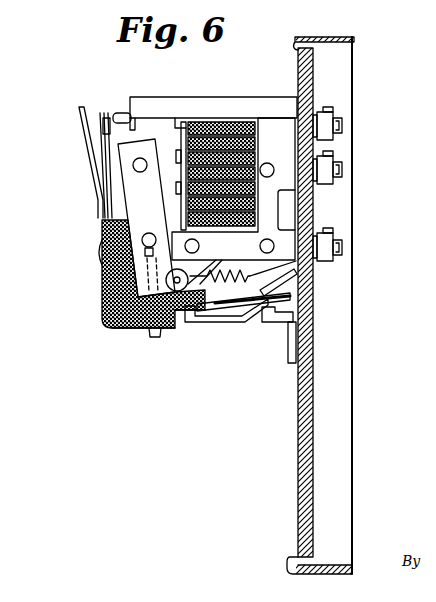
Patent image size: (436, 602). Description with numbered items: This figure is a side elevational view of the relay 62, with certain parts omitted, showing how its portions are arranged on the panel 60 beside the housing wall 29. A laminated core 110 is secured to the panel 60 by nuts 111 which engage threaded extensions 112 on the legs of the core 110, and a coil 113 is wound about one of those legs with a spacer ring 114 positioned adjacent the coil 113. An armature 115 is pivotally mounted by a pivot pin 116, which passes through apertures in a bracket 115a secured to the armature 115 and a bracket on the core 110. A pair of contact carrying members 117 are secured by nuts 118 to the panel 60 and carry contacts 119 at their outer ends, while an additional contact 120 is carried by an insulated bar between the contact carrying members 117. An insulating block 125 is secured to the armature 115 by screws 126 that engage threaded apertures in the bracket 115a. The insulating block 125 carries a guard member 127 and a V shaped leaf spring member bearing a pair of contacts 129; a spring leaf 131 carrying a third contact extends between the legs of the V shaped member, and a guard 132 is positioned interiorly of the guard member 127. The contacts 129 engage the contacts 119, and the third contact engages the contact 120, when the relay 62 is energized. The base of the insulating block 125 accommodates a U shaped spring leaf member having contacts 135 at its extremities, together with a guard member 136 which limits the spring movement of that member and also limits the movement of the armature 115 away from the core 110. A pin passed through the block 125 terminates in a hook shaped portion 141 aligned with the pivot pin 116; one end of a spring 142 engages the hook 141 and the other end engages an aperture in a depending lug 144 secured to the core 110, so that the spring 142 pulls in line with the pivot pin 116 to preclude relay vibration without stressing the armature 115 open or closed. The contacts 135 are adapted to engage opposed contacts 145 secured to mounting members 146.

The panel 60 is at (297, 55).
The housing wall 29 is at (343, 68).
The laminated core 110 is at (299, 268).
The nuts 118 is at (331, 110).
The threaded extensions 112 is at (335, 170).
The nuts 111 is at (336, 178).
The contact carrying members 117 is at (260, 106).
The contacts 119 is at (127, 112).
The additional contact 120 is at (118, 112).
The contacts 129 is at (105, 118).
The guard member 127 is at (79, 114).
The spring leaf 131 is at (100, 163).
The guard 132 is at (110, 183).
The spacer ring 114 is at (184, 128).
The coil 113 is at (230, 128).
The spring 142 is at (252, 250).
The armature 115 is at (127, 200).
The insulating block 125 is at (103, 276).
The relay 62 is at (82, 297).
The bracket 115a is at (111, 329).
The screws 126 is at (152, 334).
The pivot pin 116 is at (182, 318).
The hook shaped portion 141 is at (210, 279).
The depending lug 144 is at (282, 289).
The contacts 135 is at (262, 308).
The guard member 136 is at (214, 320).
The opposed contacts 145 is at (275, 324).
The mounting members 146 is at (291, 350).